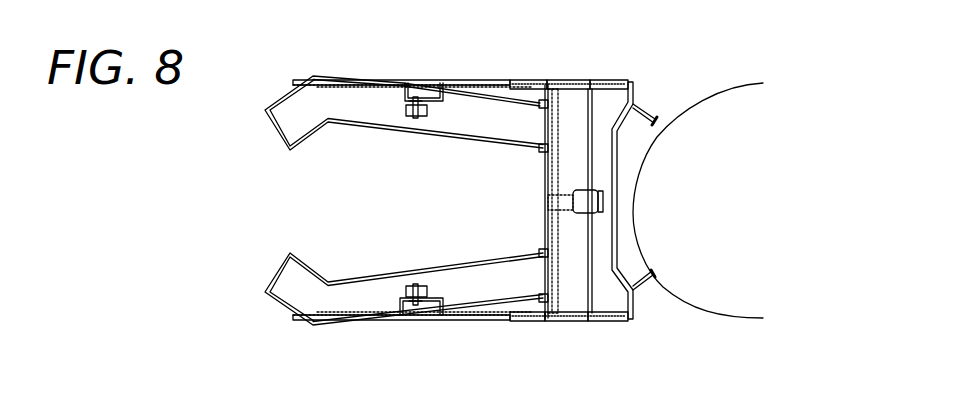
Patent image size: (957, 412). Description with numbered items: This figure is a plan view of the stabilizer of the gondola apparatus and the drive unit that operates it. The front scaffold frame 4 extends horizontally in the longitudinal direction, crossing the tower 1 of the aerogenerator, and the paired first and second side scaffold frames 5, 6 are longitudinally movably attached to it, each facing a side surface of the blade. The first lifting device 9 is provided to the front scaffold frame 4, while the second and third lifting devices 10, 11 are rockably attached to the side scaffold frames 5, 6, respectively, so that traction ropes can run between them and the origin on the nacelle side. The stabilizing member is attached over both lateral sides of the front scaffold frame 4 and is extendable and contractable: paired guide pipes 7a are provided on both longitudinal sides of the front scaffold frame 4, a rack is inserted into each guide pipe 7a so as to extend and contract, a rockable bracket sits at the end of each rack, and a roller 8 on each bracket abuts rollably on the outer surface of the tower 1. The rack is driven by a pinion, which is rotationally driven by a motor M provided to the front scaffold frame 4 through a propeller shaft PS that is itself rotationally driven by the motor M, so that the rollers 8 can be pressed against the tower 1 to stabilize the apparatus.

The tower 1 is at (707, 302).
The front scaffold frame 4 is at (593, 105).
The first side scaffold frame 5 is at (338, 128).
The second side scaffold frame 6 is at (336, 280).
The guide pipe 7a is at (563, 80).
The roller 8 is at (656, 119).
The first lifting device 9 is at (603, 196).
The second lifting device 10 is at (416, 124).
The third lifting device 11 is at (413, 280).
The motor M is at (556, 205).
The propeller shaft PS is at (560, 297).